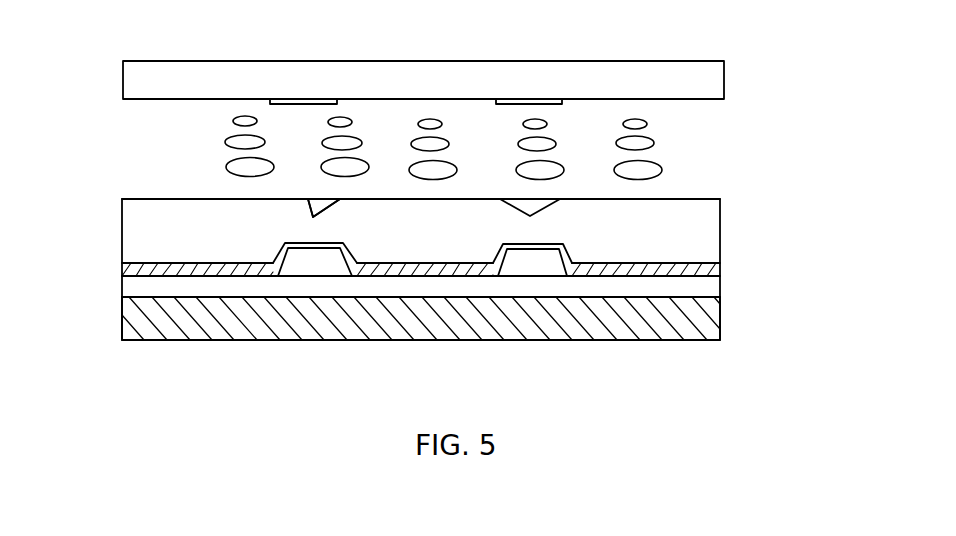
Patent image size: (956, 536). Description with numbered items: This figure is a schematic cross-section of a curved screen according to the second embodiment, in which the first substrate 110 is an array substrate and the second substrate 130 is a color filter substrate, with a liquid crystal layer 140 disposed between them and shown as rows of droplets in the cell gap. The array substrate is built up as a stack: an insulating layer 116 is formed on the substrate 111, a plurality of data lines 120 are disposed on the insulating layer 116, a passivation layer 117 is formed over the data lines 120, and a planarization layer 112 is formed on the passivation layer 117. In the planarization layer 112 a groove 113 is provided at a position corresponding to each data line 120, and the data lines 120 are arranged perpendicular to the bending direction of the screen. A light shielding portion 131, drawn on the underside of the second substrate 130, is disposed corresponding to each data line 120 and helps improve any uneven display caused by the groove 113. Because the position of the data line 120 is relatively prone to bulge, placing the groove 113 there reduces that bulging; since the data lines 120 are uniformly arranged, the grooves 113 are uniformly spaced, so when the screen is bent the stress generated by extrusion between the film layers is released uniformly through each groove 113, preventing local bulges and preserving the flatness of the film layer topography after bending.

The first substrate 110 is at (801, 197).
The substrate 111 is at (703, 328).
The planarization layer 112 is at (710, 222).
The groove 113 is at (308, 200).
The insulating layer 116 is at (710, 287).
The passivation layer 117 is at (152, 280).
The data line 120 is at (550, 264).
The second substrate 130 is at (708, 82).
The light shielding portion 131 is at (538, 100).
The liquid crystal layer 140 is at (655, 145).